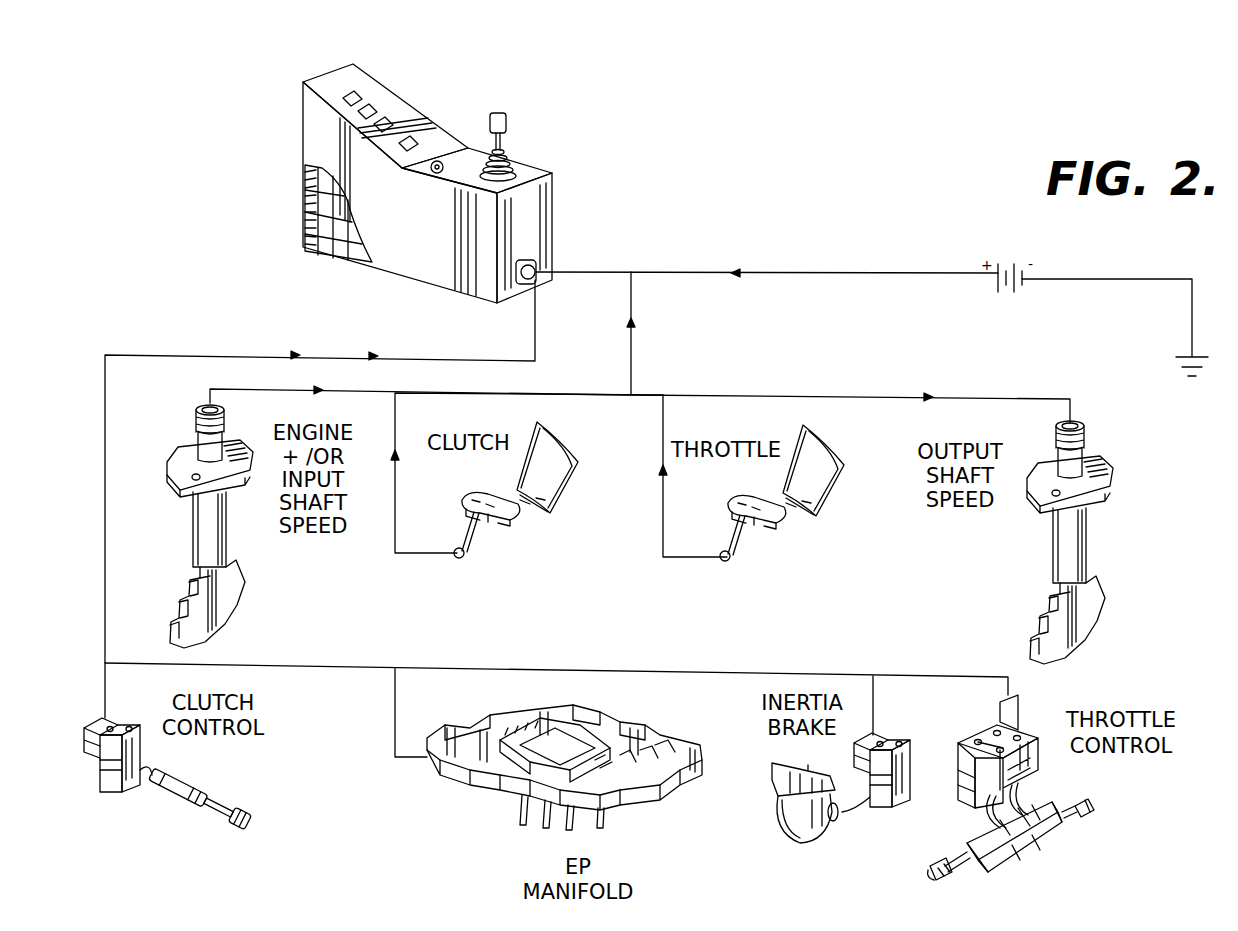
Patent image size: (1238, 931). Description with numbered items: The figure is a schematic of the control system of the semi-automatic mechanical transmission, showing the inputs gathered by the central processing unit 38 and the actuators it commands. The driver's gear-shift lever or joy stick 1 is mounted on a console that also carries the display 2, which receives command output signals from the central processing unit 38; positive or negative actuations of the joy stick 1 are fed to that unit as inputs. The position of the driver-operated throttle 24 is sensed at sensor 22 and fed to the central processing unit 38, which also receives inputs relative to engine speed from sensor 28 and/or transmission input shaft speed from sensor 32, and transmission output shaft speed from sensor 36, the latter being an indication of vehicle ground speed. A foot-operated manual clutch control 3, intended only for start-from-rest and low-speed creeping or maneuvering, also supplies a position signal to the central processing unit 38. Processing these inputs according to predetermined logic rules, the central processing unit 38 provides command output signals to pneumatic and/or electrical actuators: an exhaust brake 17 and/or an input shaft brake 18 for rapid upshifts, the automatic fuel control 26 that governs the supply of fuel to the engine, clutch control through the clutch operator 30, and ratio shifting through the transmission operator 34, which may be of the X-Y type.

The gear-shift lever 1 is at (506, 115).
The display 2 is at (426, 183).
The central processing unit 38 is at (422, 246).
The engine speed sensor 28 is at (190, 514).
The transmission input shaft speed sensor 32 is at (210, 526).
The manual clutch control 3 is at (517, 566).
The throttle 24 is at (784, 517).
The throttle position sensor 22 is at (760, 560).
The transmission output shaft speed sensor 36 is at (1025, 565).
The input shaft brake 18 is at (873, 741).
The exhaust brake 17 is at (841, 788).
The clutch operator 30 is at (228, 773).
The transmission operator 34 is at (660, 716).
The automatic fuel control 26 is at (1082, 776).